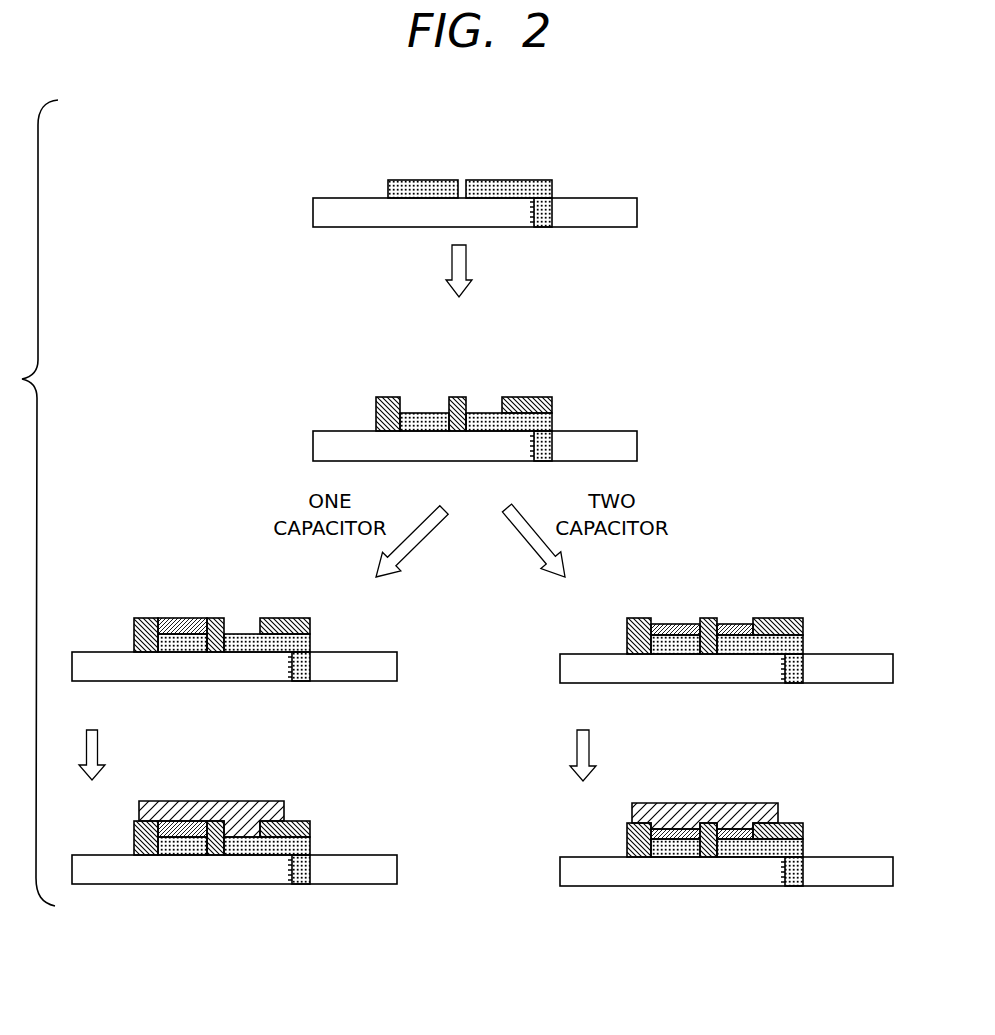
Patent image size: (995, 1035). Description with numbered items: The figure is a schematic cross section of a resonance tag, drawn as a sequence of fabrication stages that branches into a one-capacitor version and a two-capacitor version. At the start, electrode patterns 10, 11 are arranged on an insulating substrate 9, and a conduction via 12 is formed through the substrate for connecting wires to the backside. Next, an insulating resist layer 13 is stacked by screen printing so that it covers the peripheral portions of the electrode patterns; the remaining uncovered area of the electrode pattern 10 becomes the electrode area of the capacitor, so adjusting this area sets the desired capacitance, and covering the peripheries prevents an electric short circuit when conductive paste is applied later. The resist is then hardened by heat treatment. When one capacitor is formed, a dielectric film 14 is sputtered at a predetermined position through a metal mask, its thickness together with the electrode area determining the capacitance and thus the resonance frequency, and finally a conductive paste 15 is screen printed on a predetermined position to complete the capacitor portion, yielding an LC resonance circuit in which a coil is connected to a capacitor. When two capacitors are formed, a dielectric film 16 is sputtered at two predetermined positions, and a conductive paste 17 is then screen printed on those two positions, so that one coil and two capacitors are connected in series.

The insulating substrate 9 is at (635, 213).
The electrode pattern 10 is at (528, 180).
The electrode pattern 11 is at (433, 180).
The conduction via 12 is at (541, 227).
The insulating resist layer 13 is at (390, 397).
The dielectric film 14 is at (176, 618).
The conductive paste 15 is at (205, 801).
The dielectric film 16 is at (680, 624).
The conductive paste 17 is at (700, 803).